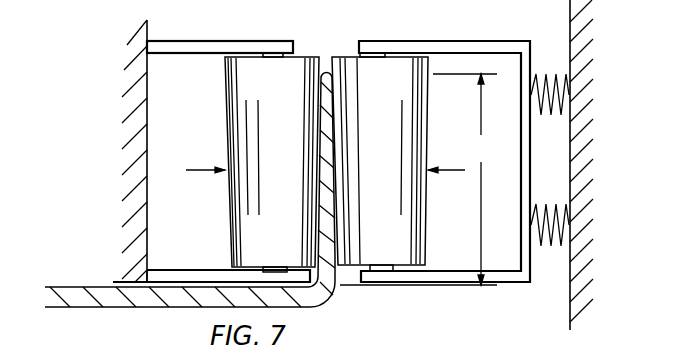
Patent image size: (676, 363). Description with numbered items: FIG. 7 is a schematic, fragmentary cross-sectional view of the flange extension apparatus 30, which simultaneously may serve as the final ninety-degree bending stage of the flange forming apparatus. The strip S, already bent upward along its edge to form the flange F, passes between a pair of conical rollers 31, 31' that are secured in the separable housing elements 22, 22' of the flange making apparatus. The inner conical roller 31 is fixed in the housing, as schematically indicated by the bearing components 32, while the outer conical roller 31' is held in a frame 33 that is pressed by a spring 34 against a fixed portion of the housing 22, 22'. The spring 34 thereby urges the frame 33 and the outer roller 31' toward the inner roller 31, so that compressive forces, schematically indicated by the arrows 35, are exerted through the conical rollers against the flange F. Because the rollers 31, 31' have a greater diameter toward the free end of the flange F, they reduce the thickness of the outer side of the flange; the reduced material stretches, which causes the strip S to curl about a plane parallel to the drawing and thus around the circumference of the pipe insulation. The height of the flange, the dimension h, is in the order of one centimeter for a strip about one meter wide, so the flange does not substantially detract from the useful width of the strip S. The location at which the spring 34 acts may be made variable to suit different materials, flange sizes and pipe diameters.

The housing element 22 is at (104, 151).
The housing element 22' is at (595, 165).
The flange extension apparatus 30 is at (356, 291).
The inner conical roller 31 is at (244, 162).
The outer conical roller 31' is at (397, 162).
The bearing components 32 is at (178, 54).
The frame 33 is at (447, 42).
The spring 34 is at (542, 203).
The compressive force arrows 35 is at (188, 172).
The strip S is at (62, 297).
The flange F is at (326, 72).
The flange height h is at (465, 179).